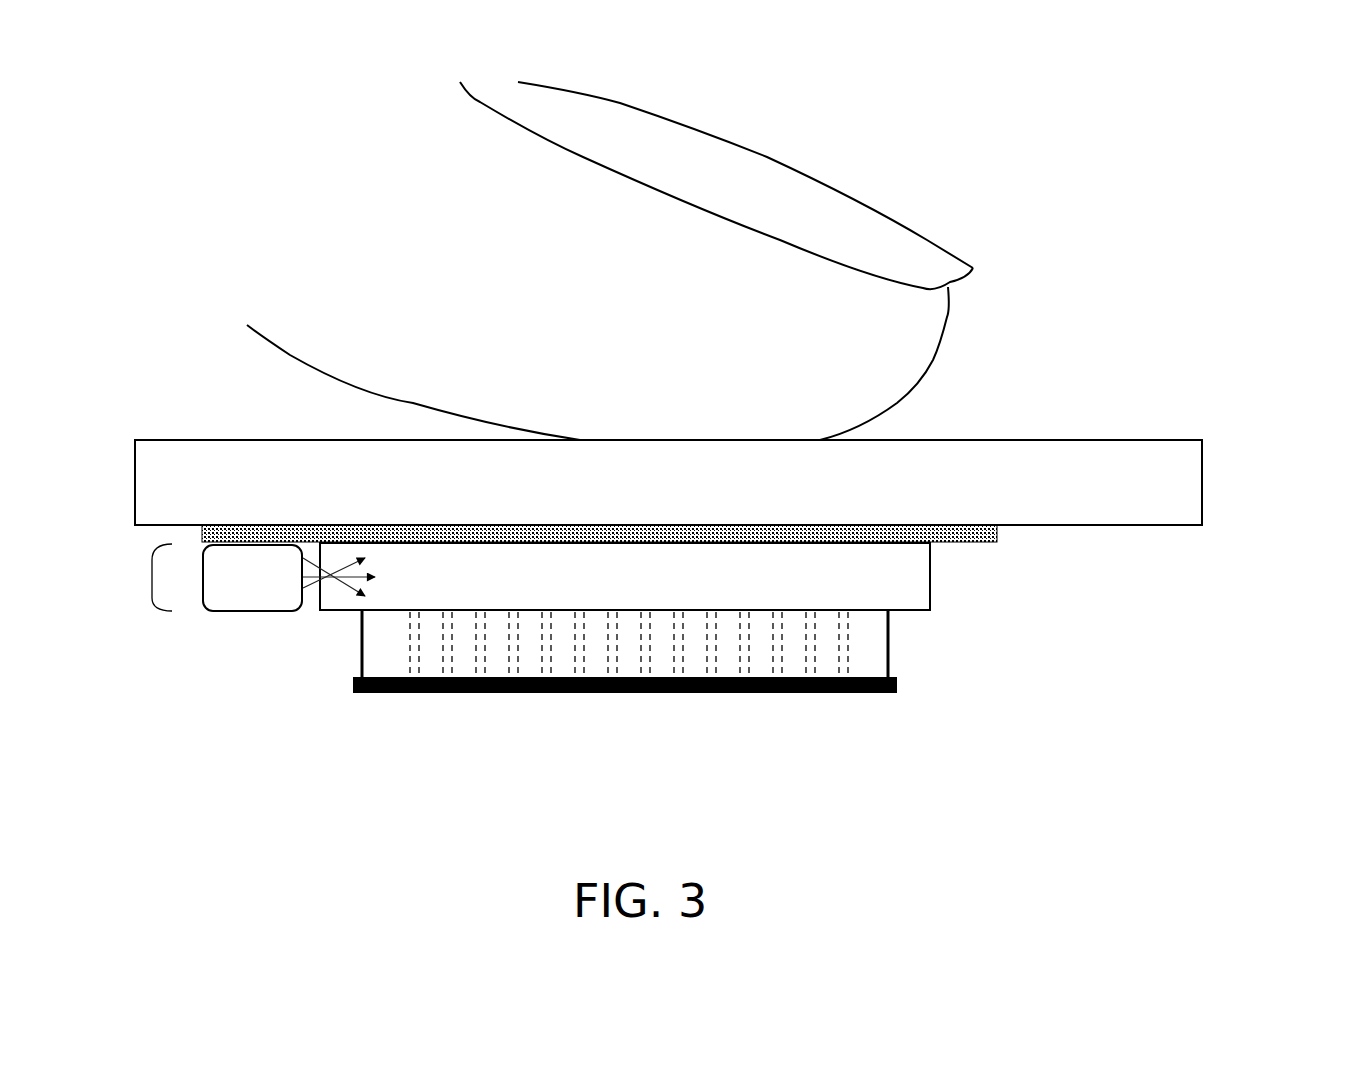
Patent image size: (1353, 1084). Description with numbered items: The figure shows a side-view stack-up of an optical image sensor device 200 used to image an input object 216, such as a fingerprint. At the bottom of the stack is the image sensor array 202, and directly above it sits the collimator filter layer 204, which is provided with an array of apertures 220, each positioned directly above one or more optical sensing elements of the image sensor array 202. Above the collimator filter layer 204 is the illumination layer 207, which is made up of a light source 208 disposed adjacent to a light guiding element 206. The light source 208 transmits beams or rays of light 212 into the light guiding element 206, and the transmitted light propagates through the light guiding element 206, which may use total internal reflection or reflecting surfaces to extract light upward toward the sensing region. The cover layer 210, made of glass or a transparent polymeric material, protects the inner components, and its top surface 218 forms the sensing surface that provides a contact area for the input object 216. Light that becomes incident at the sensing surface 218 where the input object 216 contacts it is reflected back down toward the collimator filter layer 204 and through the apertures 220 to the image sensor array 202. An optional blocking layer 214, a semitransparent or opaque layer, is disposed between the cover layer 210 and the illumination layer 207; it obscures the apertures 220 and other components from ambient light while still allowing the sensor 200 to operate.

The optical image sensor device 200 is at (1255, 622).
The image sensor array 202 is at (897, 687).
The collimator filter layer 204 is at (357, 643).
The light guiding element 206 is at (930, 603).
The illumination layer 207 is at (150, 579).
The light source 208 is at (203, 611).
The cover layer 210 is at (1203, 478).
The beams or rays of light 212 is at (343, 568).
The blocking layer 214 is at (998, 530).
The input object 216 is at (913, 388).
The top surface 218 is at (1013, 440).
The apertures 220 is at (510, 640).